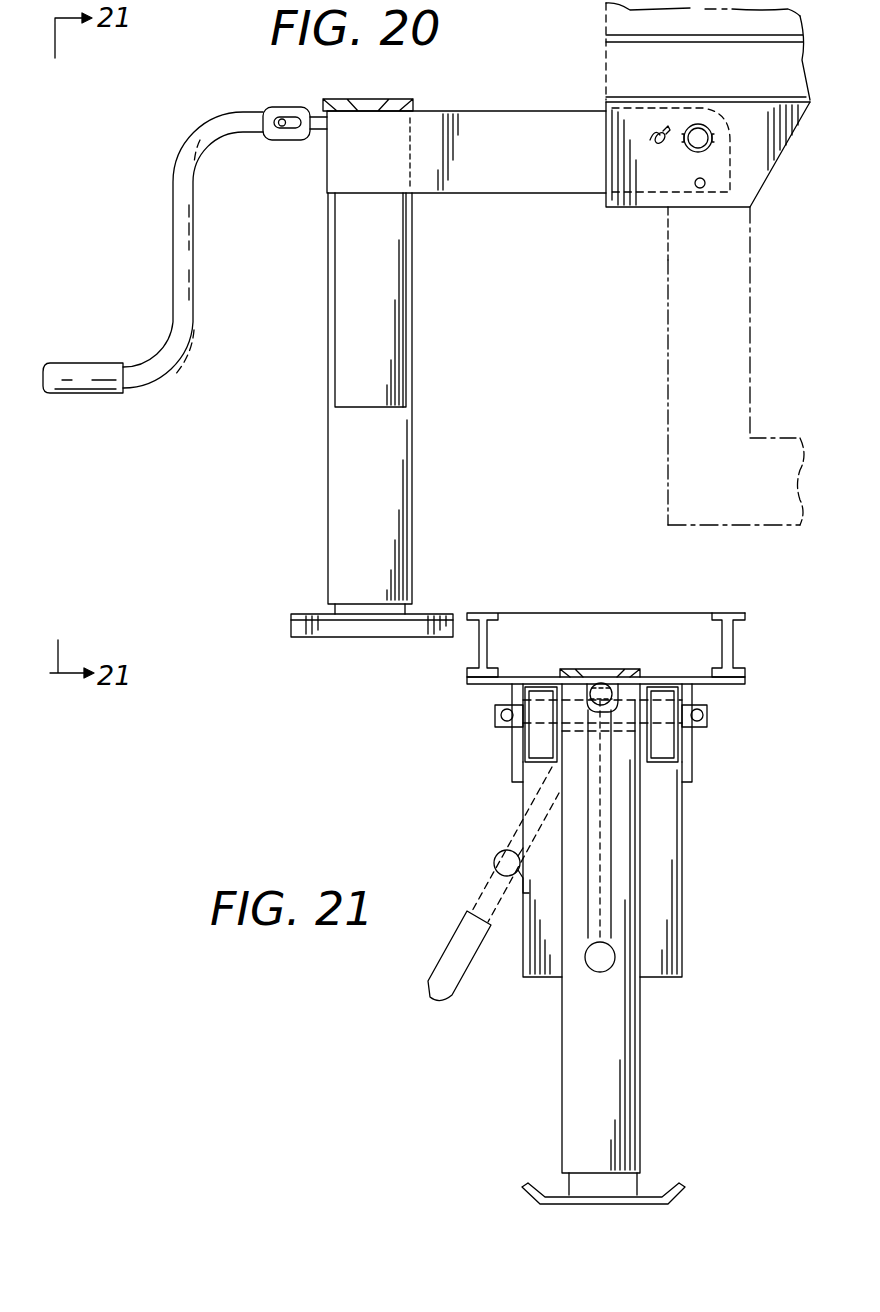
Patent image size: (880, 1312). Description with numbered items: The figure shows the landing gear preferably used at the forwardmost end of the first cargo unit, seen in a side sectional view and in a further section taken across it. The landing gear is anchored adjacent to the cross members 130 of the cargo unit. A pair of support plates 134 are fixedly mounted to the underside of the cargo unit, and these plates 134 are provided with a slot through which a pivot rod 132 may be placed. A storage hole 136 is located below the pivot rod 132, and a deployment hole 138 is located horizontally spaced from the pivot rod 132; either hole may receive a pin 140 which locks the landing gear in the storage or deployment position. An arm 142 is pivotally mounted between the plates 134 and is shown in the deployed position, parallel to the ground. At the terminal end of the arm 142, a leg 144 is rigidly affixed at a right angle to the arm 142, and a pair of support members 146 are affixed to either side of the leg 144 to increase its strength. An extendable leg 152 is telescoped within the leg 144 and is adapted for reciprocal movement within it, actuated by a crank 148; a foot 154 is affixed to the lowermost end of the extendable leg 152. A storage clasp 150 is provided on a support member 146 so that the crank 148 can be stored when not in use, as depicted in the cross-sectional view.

In FIG. 20, the cross members 130 is at (667, 264).
In FIG. 20, the pivot rod 132 is at (698, 128).
In FIG. 21, the pivot rod 132 is at (708, 713).
In FIG. 20, the support plates 134 is at (750, 165).
In FIG. 21, the support plates 134 is at (693, 743).
In FIG. 20, the storage hole 136 is at (705, 187).
In FIG. 20, the deployment hole 138 is at (652, 140).
In FIG. 20, the pin 140 is at (658, 143).
In FIG. 20, the arm 142 is at (527, 165).
In FIG. 20, the leg 144 is at (337, 475).
In FIG. 20, the support members 146 is at (398, 328).
In FIG. 20, the crank 148 is at (188, 150).
In FIG. 21, the storage clasp 150 is at (492, 855).
In FIG. 20, the extendable leg 152 is at (348, 608).
In FIG. 20, the foot 154 is at (292, 632).